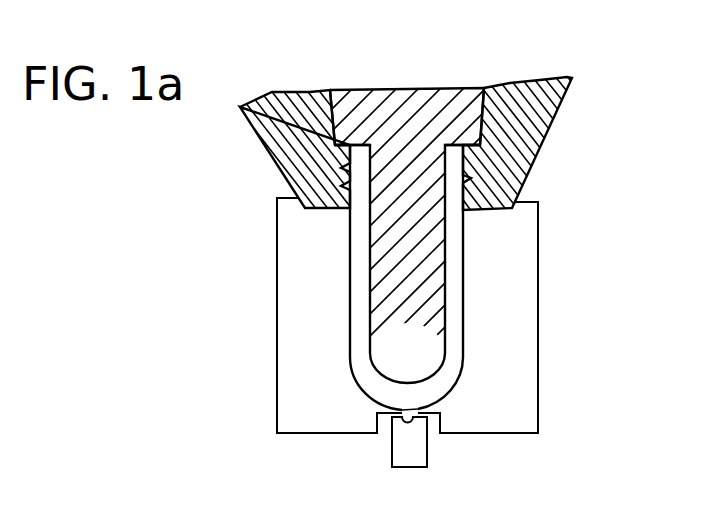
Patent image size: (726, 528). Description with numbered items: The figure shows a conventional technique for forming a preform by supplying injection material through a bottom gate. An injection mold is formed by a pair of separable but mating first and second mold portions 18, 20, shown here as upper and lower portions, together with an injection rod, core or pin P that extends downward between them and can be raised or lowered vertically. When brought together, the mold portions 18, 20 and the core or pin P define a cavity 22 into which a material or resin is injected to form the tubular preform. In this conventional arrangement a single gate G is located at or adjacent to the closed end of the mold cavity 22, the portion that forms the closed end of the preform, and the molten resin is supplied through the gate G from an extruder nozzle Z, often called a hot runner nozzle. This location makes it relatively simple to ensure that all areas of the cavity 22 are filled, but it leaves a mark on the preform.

The first mold portion 18 is at (536, 118).
The injection rod, core or pin P is at (405, 107).
The cavity 22 is at (348, 280).
The second mold portion 20 is at (522, 287).
The gate G is at (414, 406).
The extruder nozzle Z is at (415, 445).